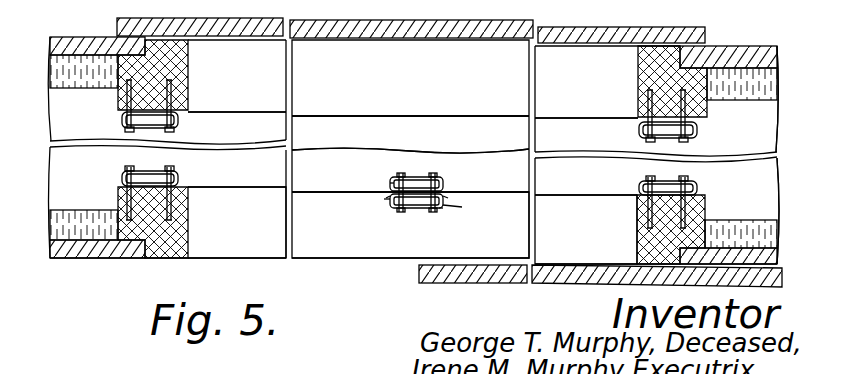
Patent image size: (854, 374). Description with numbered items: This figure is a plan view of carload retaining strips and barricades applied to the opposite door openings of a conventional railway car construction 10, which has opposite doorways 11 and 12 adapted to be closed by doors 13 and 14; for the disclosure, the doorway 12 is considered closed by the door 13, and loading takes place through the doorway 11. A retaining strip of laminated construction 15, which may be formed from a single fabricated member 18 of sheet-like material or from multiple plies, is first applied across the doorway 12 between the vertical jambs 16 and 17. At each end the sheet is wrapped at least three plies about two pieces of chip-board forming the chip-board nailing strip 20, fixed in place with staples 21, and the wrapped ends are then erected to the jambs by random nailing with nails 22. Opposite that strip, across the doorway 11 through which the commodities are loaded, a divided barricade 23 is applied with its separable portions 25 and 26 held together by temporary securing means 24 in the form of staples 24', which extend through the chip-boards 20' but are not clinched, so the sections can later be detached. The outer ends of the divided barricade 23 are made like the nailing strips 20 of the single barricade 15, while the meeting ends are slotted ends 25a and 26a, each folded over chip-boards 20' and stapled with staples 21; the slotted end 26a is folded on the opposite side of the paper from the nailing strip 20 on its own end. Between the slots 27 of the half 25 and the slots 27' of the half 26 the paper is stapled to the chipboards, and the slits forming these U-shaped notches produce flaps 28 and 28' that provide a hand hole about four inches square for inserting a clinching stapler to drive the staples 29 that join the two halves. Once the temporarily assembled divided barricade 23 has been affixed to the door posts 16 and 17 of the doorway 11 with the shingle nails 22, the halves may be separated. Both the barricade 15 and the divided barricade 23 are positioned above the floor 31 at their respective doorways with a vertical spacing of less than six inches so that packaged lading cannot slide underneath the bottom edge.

The railway car construction 10 is at (779, 180).
The doorway 11 is at (188, 231).
The doorway 12 is at (188, 84).
The door 13 is at (546, 284).
The door 14 is at (230, 37).
The retaining strip of laminated construction 15 is at (373, 111).
The jamb 16 is at (118, 96).
The jamb 17 is at (696, 100).
The fabricated member of sheet-like material 18 is at (247, 111).
The chip-board nailing strip 20 is at (432, 153).
The chip-boards 20' is at (419, 205).
The staples 21 is at (170, 132).
The nails 22 is at (122, 127).
The divided barricade 23 is at (316, 189).
The temporary securing means 24 is at (417, 227).
The staples 24' is at (417, 150).
The separable portion of divided barricade 25 is at (545, 207).
The slotted end 25a is at (390, 183).
The separable portion of divided barricade 26 is at (243, 188).
The slotted end 26a is at (443, 209).
The slots 27 is at (473, 210).
The slots 27' is at (362, 209).
The flaps 28 is at (473, 226).
The flaps 28' is at (358, 222).
The staples 29 is at (397, 177).
The floor 31 is at (298, 162).